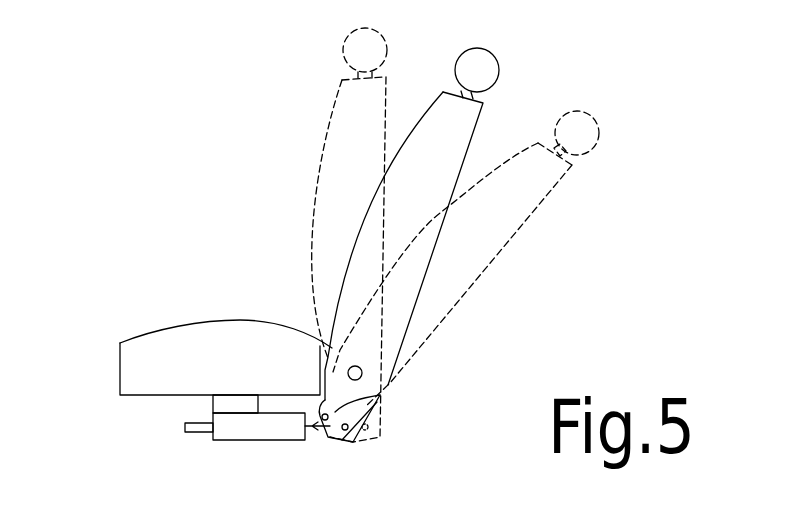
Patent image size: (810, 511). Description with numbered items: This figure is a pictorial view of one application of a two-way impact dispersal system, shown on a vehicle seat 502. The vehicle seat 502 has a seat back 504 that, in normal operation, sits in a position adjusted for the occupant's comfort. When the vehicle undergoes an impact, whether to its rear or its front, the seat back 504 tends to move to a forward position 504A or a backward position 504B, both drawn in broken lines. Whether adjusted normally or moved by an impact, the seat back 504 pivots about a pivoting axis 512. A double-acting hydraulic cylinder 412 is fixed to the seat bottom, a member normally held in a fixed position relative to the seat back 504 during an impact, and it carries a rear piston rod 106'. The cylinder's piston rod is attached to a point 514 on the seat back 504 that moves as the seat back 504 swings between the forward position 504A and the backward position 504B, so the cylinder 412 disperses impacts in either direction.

The vehicle seat 502 is at (120, 372).
The rear piston rod 106' is at (159, 422).
The double-acting hydraulic cylinder 412 is at (225, 441).
The seat back 504 is at (428, 105).
The forward position 504A is at (325, 134).
The backward position 504B is at (543, 200).
The pivoting axis 512 is at (362, 370).
The point 514 is at (330, 437).